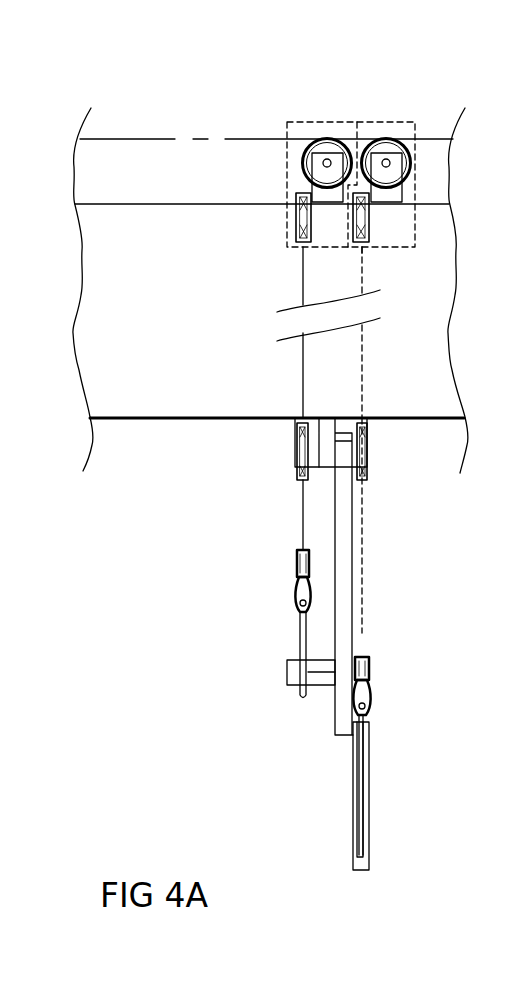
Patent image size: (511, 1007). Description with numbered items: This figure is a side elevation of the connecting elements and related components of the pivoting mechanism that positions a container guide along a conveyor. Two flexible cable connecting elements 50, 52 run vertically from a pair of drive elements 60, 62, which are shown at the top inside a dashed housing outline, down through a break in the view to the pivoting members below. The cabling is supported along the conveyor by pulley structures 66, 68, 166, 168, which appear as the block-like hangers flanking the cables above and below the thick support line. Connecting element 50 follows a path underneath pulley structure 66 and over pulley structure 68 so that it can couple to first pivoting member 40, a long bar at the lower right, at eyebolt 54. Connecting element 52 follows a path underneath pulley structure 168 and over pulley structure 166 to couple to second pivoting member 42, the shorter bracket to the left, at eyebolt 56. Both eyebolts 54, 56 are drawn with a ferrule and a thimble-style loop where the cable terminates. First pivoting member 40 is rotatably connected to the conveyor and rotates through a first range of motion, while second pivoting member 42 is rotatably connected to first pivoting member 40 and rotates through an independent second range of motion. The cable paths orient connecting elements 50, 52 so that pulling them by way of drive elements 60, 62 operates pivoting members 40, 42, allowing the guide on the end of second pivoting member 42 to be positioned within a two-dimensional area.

The first pivoting member 40 is at (367, 795).
The second pivoting member 42 is at (287, 673).
The connecting element 50 is at (362, 268).
The connecting element 52 is at (303, 276).
The eyebolt 54 is at (372, 715).
The eyebolt 56 is at (298, 625).
The drive element 60 is at (395, 127).
The drive element 62 is at (317, 127).
The pulley structure 66 is at (368, 455).
The pulley structure 68 is at (368, 455).
The pulley structure 166 is at (297, 453).
The pulley structure 168 is at (297, 453).